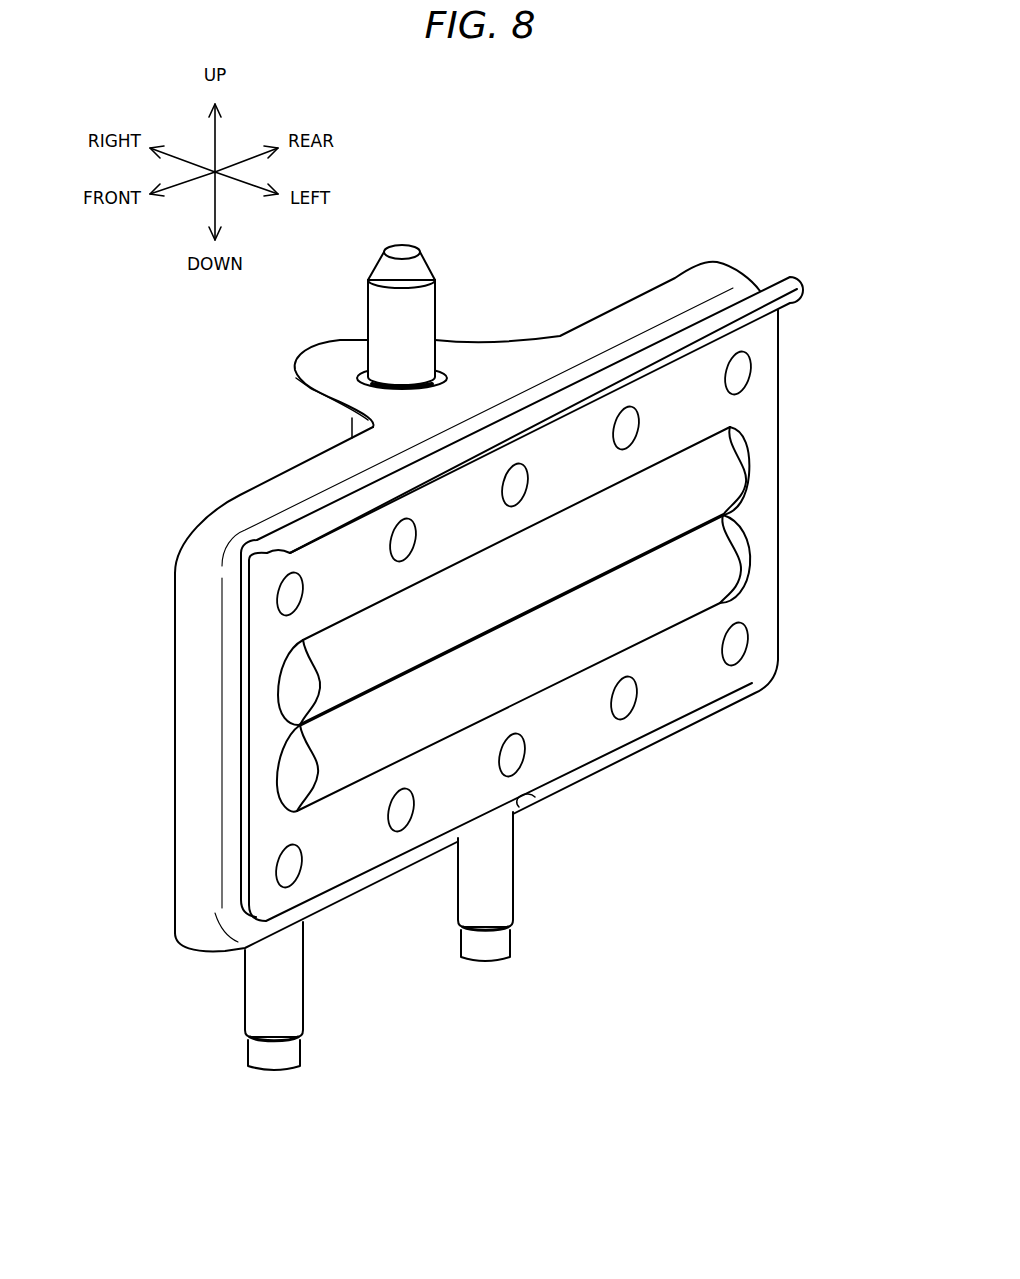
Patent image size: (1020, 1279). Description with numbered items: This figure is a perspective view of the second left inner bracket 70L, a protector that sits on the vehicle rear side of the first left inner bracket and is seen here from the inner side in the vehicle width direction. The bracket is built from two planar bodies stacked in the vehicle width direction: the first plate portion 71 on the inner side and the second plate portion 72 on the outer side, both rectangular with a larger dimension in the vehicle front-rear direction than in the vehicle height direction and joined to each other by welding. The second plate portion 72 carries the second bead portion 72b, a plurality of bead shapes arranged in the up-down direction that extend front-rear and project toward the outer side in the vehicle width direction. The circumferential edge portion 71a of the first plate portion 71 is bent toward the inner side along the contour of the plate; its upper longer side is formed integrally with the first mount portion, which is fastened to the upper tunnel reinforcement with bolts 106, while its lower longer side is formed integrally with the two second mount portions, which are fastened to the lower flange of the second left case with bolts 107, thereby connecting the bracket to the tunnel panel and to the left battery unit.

The second left inner bracket 70L is at (731, 206).
The first plate portion 71 is at (260, 479).
The circumferential edge portion 71a is at (627, 323).
The second plate portion 72 is at (671, 705).
The second bead portion 72b is at (728, 557).
The bolt 106 is at (406, 243).
The bolt 107 is at (272, 1073).